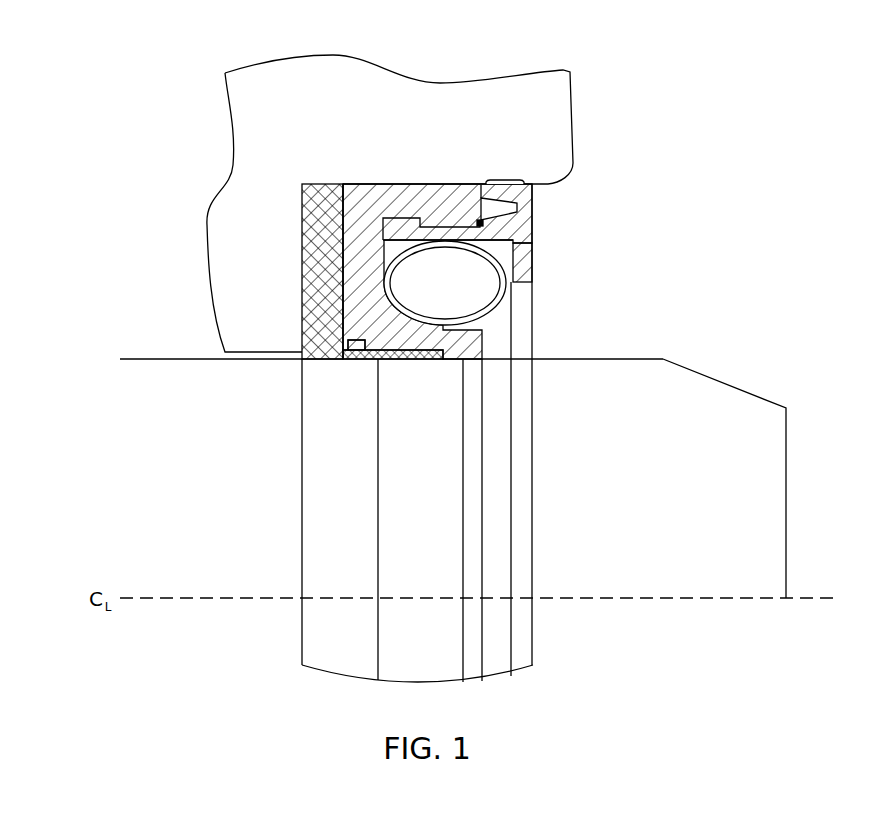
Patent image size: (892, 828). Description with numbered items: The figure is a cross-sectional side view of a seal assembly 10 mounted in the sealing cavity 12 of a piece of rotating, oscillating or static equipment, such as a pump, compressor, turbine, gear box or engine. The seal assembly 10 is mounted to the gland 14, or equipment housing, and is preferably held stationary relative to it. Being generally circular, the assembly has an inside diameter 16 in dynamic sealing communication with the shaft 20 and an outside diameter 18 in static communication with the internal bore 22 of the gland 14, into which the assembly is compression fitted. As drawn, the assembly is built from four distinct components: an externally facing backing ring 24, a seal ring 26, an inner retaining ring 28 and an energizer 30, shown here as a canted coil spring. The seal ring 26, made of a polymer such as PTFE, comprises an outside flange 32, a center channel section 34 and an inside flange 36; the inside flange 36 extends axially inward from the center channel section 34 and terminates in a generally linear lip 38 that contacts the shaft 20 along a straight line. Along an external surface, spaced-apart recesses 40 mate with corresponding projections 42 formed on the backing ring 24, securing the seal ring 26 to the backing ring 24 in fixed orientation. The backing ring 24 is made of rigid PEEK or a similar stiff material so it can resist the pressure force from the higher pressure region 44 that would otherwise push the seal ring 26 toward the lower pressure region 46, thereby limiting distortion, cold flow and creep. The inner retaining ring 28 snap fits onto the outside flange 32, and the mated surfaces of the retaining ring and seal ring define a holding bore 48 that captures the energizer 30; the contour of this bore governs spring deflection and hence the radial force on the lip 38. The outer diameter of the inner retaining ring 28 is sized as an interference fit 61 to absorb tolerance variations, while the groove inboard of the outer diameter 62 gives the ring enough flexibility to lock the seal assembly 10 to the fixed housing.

The seal assembly 10 is at (627, 311).
The sealing cavity 12 is at (611, 174).
The gland 14 is at (420, 78).
The inside diameter 16 is at (402, 362).
The outside diameter 18 is at (343, 184).
The shaft 20 is at (774, 432).
The internal bore 22 is at (546, 185).
The backing ring 24 is at (297, 279).
The seal ring 26 is at (373, 176).
The inner retaining ring 28 is at (542, 270).
The energizer 30 is at (501, 302).
The outside flange 32 is at (457, 196).
The center channel section 34 is at (353, 231).
The inside flange 36 is at (443, 358).
The lip 38 is at (473, 361).
The recesses 40 is at (352, 346).
The projections 42 is at (355, 352).
The higher pressure region 44 is at (745, 168).
The lower pressure region 46 is at (90, 232).
The holding bore 48 is at (503, 246).
The interference fit 61 is at (516, 183).
The groove inboard of the outer diameter 62 is at (494, 208).